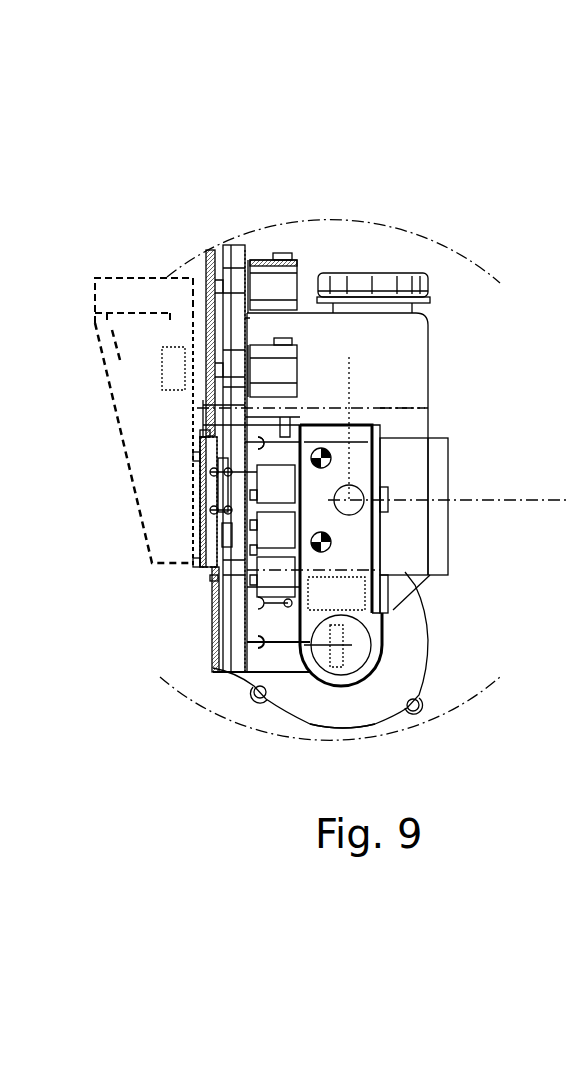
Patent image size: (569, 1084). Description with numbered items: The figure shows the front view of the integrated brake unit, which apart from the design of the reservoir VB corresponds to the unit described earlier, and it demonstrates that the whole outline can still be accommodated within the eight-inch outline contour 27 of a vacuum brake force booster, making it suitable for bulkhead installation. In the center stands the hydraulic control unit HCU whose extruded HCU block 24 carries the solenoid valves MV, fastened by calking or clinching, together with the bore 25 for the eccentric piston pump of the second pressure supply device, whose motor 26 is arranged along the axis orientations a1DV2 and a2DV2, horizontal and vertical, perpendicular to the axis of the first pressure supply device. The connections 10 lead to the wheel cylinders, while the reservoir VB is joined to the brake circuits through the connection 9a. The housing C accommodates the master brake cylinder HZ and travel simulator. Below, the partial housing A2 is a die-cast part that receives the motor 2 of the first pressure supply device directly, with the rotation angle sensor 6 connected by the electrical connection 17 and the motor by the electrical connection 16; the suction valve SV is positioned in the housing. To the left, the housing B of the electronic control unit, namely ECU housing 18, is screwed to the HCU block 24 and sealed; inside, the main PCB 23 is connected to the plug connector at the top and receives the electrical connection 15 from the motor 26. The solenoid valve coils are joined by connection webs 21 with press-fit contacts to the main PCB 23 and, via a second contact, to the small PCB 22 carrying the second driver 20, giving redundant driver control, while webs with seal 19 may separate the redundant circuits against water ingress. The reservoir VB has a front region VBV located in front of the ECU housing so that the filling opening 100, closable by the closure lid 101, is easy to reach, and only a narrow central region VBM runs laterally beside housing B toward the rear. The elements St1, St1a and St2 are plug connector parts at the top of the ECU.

The closure lid of the reservoir 101 is at (132, 287).
The opening of the reservoir 100 is at (93, 313).
The front region of the reservoir VBV is at (123, 335).
The actuator element St1a is at (162, 367).
The master brake cylinder HZ is at (108, 498).
The housing for ECU B is at (218, 247).
The second actuator plate St2 is at (267, 257).
The first actuator St1 is at (270, 350).
The reservoir VB is at (307, 332).
The housing for master brake cylinder and travel simulator C is at (408, 410).
The connection to the reservoir 9a is at (386, 415).
The vertical orientation of the axis of the second pressure supply device a2DV2 is at (350, 375).
The horizontal orientation of the axis of the second pressure supply device a1DV2 is at (403, 505).
The connections to the wheel cylinder 10 is at (387, 573).
The electrical connection motor between pressure supply device DV2 and ECU 15 is at (288, 410).
The central region of the reservoir VBM is at (193, 455).
The ECU housing 18 is at (203, 407).
The web with seal 19 is at (200, 432).
The driver for solenoid valve 20 is at (193, 457).
The connection web of solenoid valve 21 is at (195, 480).
The small PCB 22 is at (193, 508).
The solenoid valve MV is at (225, 640).
The main PCB 23 is at (225, 603).
The electrical connection of pressure supply device DV1 motor 16 is at (245, 578).
The outline contour of vacuum brake force booster 27 is at (207, 707).
The hydraulic control unit HCU is at (375, 600).
The suction valve of pressure supply device DV1 SV is at (385, 635).
The rotation angle sensor 6 is at (341, 648).
The bore for eccentric piston pump DV2 25 is at (397, 503).
The HCU block 24 is at (397, 457).
The motor for pressure supply device DV2 26 is at (440, 533).
The motor 2 is at (421, 685).
The electrical connection of rotational angle sensor 17 is at (258, 698).
The partial housing for pressure supply device DV1 A2 is at (360, 663).